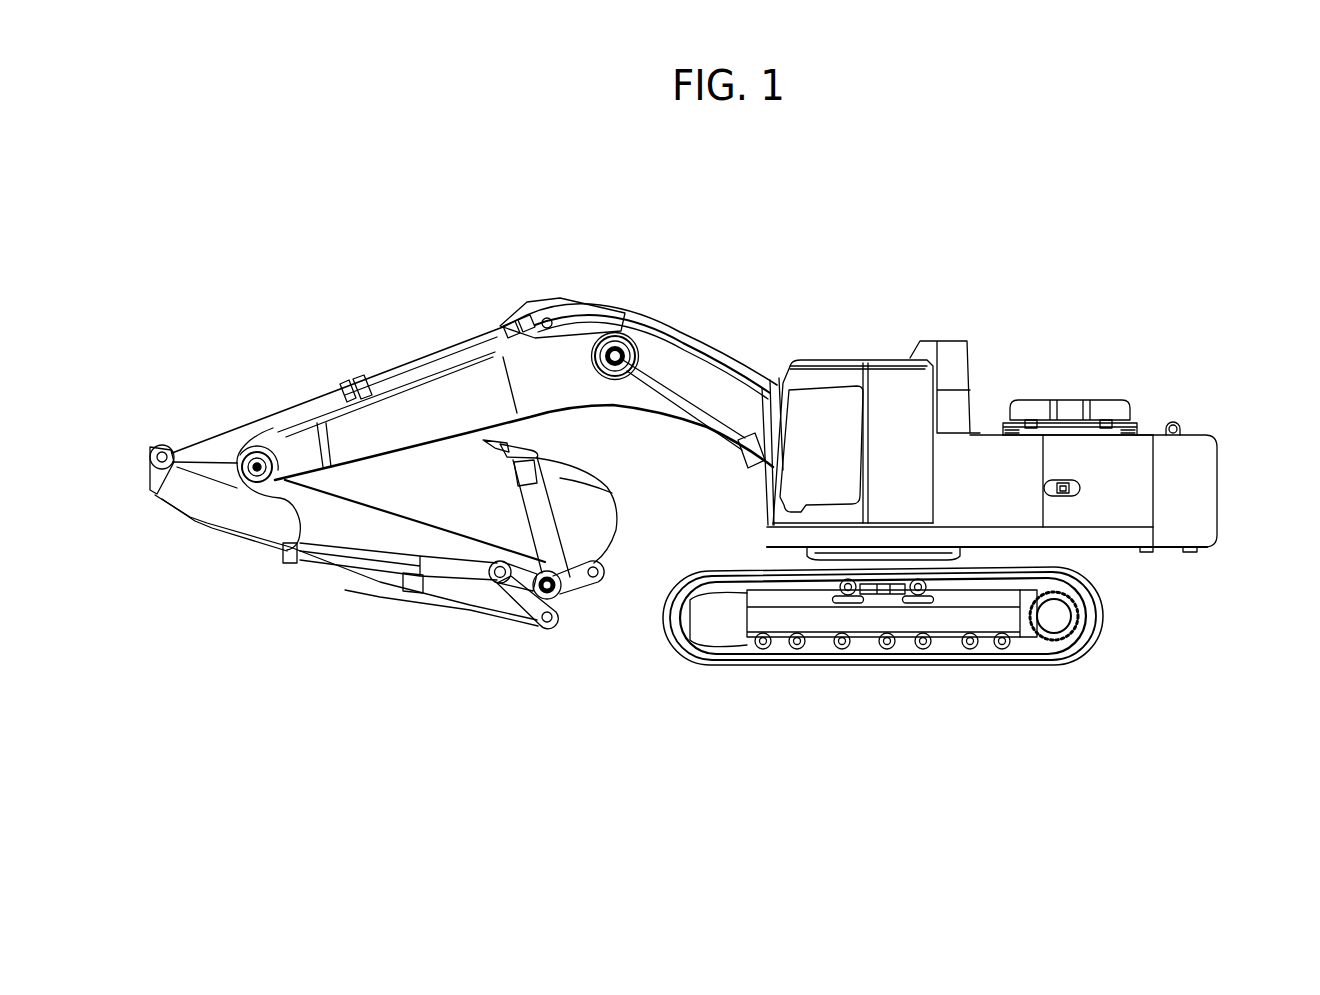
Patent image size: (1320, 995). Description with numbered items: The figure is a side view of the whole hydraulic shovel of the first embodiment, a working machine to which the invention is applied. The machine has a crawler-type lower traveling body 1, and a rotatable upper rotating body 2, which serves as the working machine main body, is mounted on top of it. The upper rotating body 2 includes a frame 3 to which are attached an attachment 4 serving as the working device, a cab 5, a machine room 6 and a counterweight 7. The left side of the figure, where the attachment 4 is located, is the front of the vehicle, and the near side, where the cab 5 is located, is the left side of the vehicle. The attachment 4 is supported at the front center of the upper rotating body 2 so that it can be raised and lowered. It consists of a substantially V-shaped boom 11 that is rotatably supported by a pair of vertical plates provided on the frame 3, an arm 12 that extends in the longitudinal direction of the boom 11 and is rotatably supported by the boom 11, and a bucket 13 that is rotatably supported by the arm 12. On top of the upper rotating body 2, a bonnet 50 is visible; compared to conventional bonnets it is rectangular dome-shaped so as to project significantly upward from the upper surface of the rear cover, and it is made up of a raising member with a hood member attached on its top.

The lower traveling body 1 is at (966, 665).
The upper rotating body 2 is at (1059, 321).
The frame 3 is at (776, 541).
The attachment 4 is at (682, 273).
The cab 5 is at (886, 387).
The machine room 6 is at (1161, 400).
The counterweight 7 is at (1212, 485).
The boom 11 is at (437, 400).
The arm 12 is at (229, 508).
The bucket 13 is at (604, 509).
The bonnet 50 is at (1104, 407).